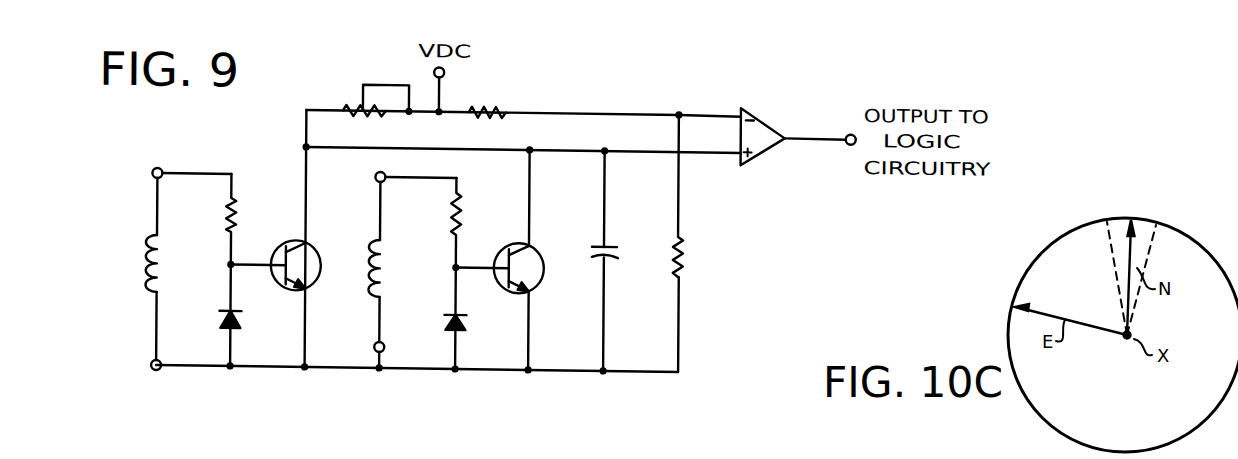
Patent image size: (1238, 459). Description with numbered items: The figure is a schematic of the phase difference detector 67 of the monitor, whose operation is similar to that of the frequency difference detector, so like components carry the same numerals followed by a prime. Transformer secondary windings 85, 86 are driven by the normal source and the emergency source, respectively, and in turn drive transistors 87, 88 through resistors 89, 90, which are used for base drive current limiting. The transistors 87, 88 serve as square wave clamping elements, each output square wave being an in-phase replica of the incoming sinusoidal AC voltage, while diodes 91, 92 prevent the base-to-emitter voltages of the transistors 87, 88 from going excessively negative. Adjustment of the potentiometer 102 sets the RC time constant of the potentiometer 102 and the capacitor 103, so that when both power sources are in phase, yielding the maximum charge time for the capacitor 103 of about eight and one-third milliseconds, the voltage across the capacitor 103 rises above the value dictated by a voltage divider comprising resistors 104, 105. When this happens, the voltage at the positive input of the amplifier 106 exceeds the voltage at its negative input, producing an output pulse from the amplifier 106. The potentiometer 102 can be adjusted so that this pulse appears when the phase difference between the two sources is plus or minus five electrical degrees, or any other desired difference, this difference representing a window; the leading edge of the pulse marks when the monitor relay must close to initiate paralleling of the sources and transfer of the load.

The phase difference detector 67 is at (287, 187).
The transformer secondary winding 85 is at (144, 266).
The transformer secondary winding 86 is at (368, 277).
The transistor 87 is at (296, 242).
The transistor 88 is at (580, 202).
The resistor 89 is at (223, 216).
The resistor 90 is at (450, 219).
The diode 91 is at (219, 325).
The diode 92 is at (446, 322).
The potentiometer 102 is at (355, 103).
The capacitor 103 is at (646, 236).
The resistor 104 is at (491, 104).
The resistor 105 is at (683, 247).
The amplifier 106 is at (772, 125).